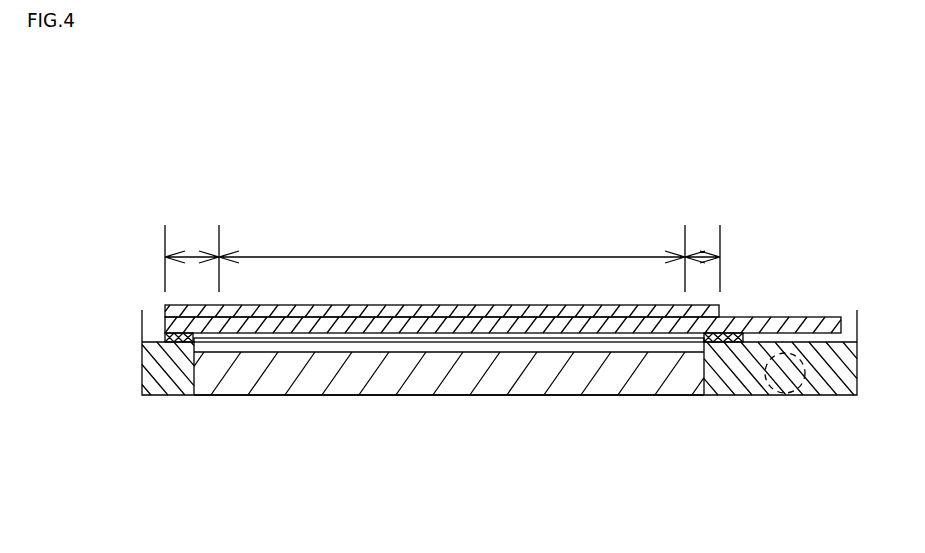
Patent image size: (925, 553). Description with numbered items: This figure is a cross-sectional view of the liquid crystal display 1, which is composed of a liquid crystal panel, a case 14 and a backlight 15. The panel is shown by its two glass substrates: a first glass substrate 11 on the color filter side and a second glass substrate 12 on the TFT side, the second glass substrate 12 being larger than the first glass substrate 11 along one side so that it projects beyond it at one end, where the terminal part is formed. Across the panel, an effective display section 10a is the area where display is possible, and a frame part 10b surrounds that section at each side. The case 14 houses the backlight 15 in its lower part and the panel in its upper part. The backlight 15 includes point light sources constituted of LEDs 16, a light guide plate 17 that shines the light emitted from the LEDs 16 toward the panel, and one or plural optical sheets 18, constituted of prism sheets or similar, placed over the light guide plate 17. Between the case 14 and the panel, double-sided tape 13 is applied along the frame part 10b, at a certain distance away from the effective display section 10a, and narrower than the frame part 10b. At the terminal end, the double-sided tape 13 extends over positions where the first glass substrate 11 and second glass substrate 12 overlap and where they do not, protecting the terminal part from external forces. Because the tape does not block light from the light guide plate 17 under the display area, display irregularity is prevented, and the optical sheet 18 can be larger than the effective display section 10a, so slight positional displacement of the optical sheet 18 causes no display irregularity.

The liquid crystal display 1 is at (127, 112).
The effective display section 10a is at (457, 257).
The frame part 10b is at (196, 250).
The first glass substrate 11 is at (167, 305).
The second glass substrate 12 is at (810, 318).
The double-sided tape 13 is at (168, 338).
The case 14 is at (843, 393).
The backlight 15 is at (281, 412).
The LED 16 is at (762, 395).
The light guide plate 17 is at (572, 386).
The optical sheet 18 is at (385, 342).